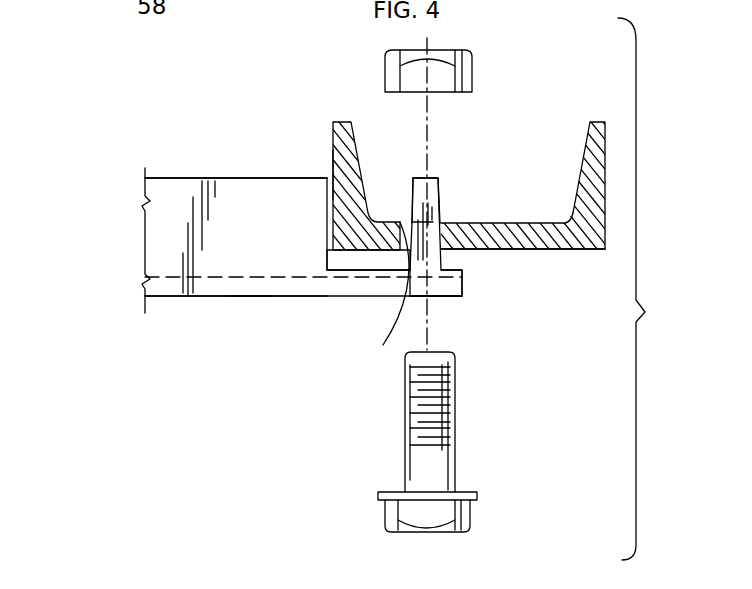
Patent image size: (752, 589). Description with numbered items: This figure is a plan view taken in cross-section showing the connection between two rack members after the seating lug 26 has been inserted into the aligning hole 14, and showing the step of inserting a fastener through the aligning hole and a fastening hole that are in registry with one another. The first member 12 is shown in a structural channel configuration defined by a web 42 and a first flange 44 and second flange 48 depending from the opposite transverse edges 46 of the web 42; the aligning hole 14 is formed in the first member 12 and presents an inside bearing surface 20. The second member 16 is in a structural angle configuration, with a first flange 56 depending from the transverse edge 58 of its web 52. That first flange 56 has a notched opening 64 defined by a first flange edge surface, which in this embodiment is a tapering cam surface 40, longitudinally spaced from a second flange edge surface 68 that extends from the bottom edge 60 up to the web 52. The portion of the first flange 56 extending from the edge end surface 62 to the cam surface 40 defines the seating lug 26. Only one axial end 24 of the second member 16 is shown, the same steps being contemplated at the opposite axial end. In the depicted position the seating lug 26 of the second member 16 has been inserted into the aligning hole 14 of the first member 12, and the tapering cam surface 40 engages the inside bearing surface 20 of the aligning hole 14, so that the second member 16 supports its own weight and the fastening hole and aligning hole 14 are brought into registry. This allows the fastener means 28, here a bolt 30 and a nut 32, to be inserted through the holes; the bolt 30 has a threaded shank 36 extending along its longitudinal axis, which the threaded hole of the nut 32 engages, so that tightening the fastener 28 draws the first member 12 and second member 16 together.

The first member 12 is at (555, 252).
The aligning hole 14 is at (447, 227).
The second member 16 is at (216, 301).
The inside bearing surface 20 is at (385, 298).
The axial end 24 is at (467, 286).
The seating lug 26 is at (436, 178).
The fastener means 28 is at (475, 508).
The bolt 30 is at (478, 442).
The nut 32 is at (467, 70).
The threaded shank 36 is at (455, 402).
The cam surface 40 is at (412, 195).
The web 42 is at (528, 237).
The first flange 44 is at (606, 172).
The transverse edges 46 is at (328, 254).
The second flange 48 is at (333, 147).
The web 52 is at (170, 303).
The first flange 56 is at (172, 232).
The transverse edge 58 is at (248, 300).
The bottom edge 60 is at (177, 178).
The edge end surface 62 is at (443, 223).
The notched opening 64 is at (363, 262).
The second flange edge surface 68 is at (333, 170).